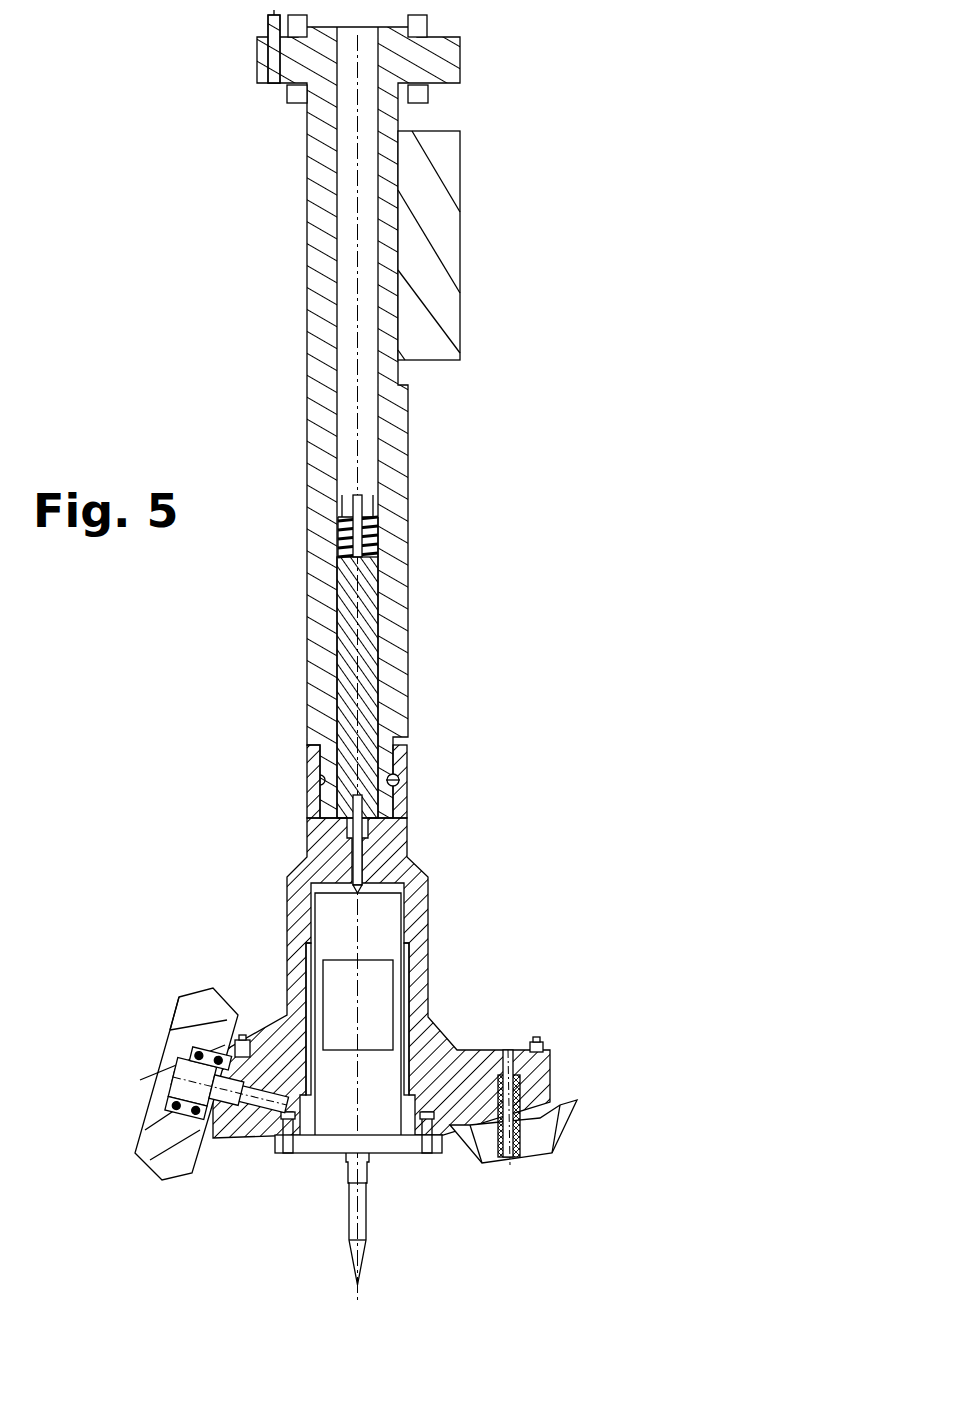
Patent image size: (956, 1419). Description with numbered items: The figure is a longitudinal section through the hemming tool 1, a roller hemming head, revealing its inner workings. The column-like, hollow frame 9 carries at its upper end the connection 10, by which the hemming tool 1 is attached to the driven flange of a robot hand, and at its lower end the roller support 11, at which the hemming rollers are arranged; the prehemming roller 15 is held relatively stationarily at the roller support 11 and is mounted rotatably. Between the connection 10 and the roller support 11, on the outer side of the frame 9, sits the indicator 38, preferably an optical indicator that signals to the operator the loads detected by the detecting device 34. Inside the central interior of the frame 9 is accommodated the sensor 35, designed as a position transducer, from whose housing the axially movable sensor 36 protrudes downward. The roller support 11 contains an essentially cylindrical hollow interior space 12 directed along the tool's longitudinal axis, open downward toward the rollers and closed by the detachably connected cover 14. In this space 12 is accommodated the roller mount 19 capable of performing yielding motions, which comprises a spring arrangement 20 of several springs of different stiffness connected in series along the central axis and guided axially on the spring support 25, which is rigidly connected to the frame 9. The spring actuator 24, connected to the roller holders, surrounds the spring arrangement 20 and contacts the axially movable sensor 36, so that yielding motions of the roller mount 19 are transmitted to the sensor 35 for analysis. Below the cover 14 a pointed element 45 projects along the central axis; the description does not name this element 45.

The hemming tool 1 is at (282, 416).
The frame 9 is at (319, 211).
The connection 10 is at (270, 52).
The roller support 11 is at (318, 845).
The hollow interior space 12 is at (327, 889).
The cover 14 is at (390, 1145).
The prehemming roller 15 is at (155, 1153).
The roller mount 19 is at (302, 997).
The spring arrangement 20 is at (449, 991).
The spring support 25 is at (380, 993).
The spring actuator 24 is at (395, 940).
The detecting device 34 is at (415, 602).
The sensor 35 is at (348, 665).
The axially movable sensor 36 is at (360, 857).
The indicator 38 is at (447, 233).
The nozzle tip 45 is at (353, 1230).